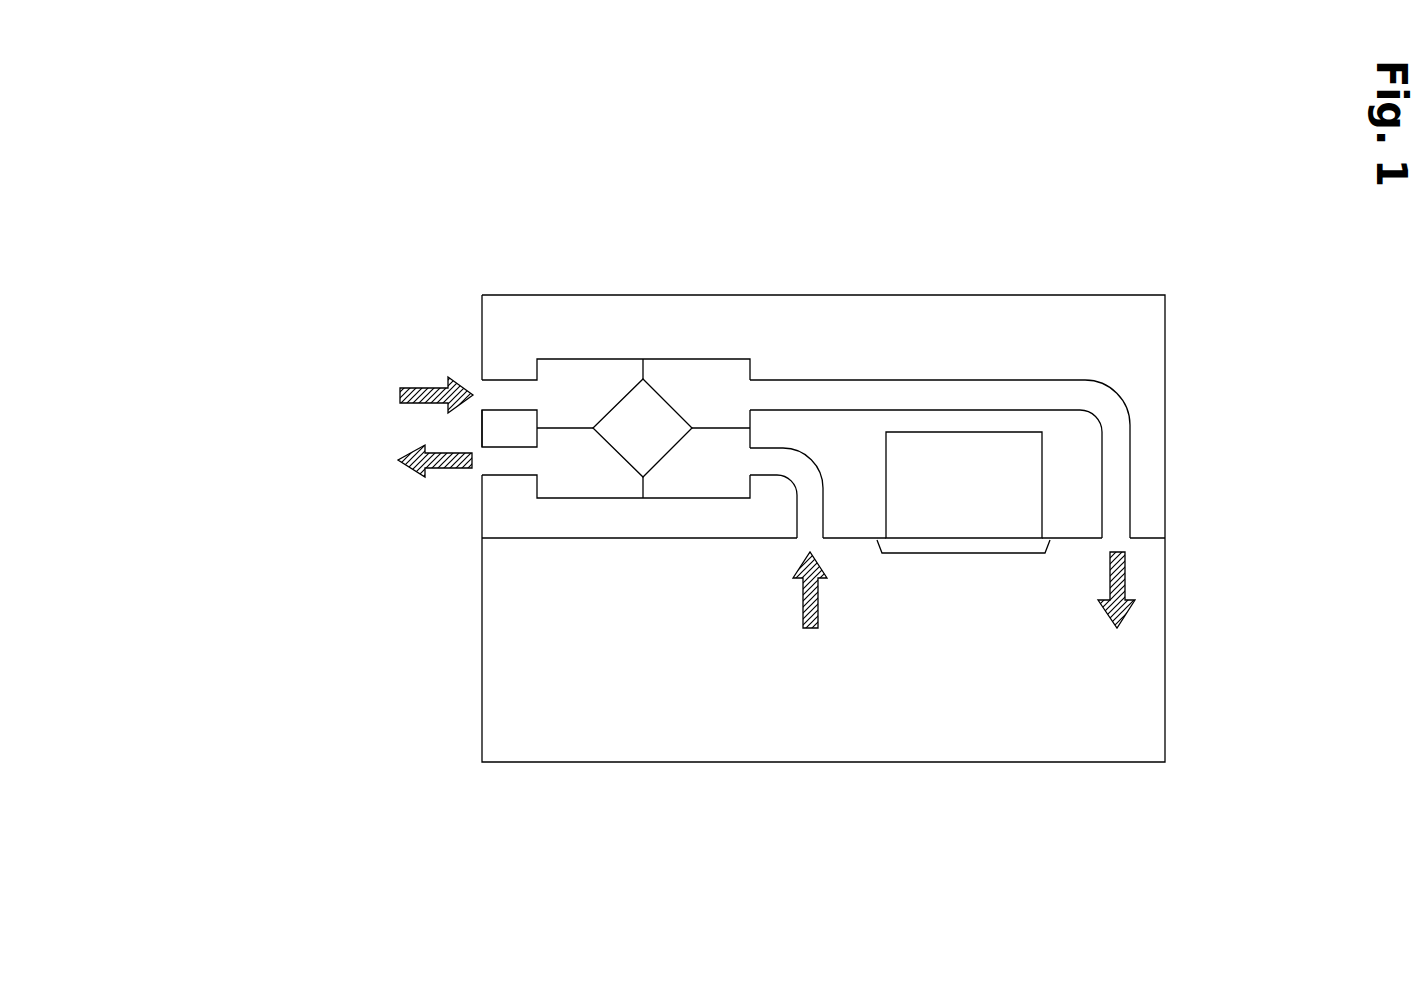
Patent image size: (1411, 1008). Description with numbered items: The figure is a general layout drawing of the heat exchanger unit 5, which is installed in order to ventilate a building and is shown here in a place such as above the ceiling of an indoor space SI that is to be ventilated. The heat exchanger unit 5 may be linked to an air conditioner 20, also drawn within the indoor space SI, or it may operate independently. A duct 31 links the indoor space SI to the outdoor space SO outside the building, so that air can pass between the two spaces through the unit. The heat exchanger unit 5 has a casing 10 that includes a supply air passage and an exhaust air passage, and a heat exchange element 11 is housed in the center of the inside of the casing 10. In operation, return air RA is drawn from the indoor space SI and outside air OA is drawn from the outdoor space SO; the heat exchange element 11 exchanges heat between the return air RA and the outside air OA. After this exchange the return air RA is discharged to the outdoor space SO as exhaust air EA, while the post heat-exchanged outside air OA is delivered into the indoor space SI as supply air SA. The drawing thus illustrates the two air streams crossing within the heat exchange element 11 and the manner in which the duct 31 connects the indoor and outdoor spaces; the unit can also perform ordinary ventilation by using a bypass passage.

The heat exchanger unit 5 is at (648, 318).
The casing 10 is at (725, 358).
The heat exchange element 11 is at (633, 407).
The air conditioner 20 is at (987, 525).
The duct 31 is at (505, 390).
The outside air OA is at (418, 388).
The exhaust air EA is at (444, 478).
The return air RA is at (805, 595).
The supply air SA is at (1120, 573).
The outdoor space SO is at (152, 447).
The indoor space SI is at (663, 678).